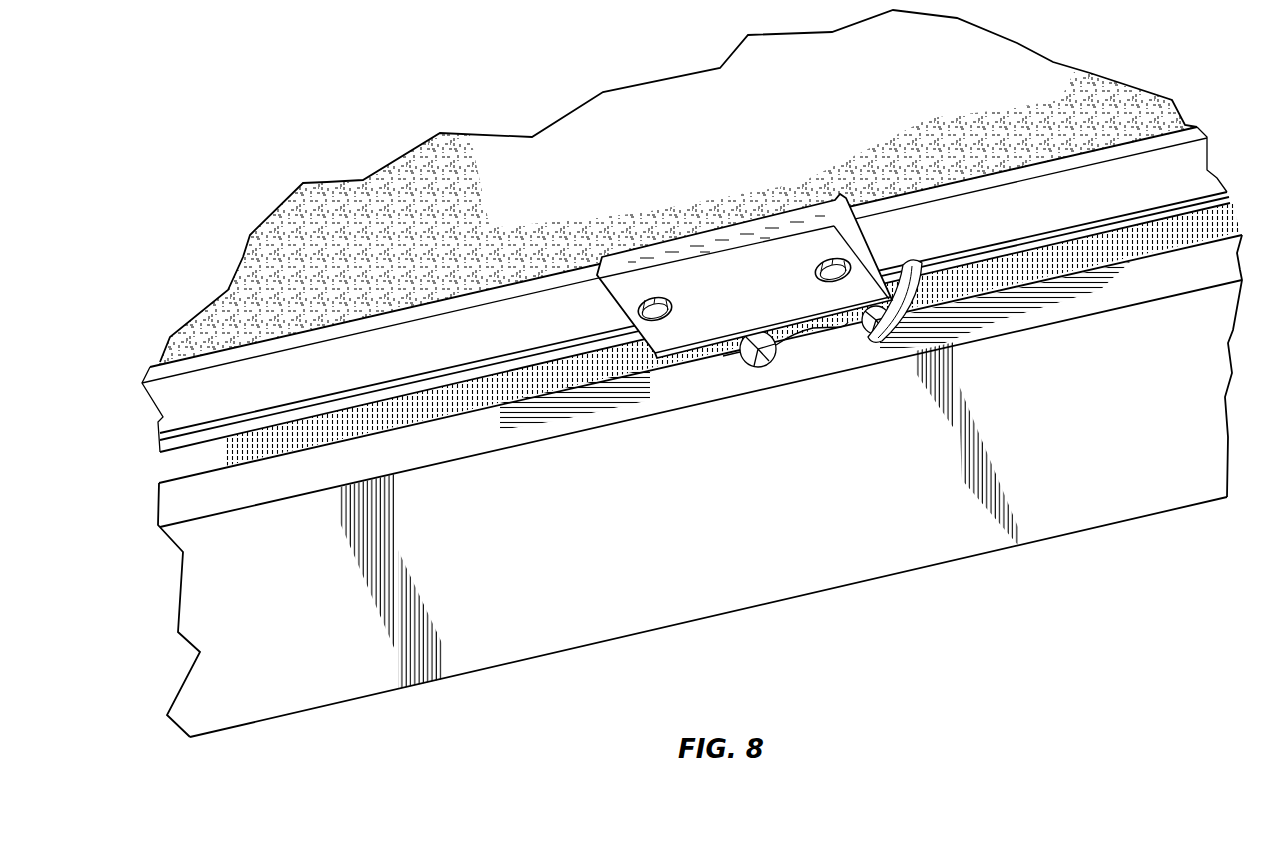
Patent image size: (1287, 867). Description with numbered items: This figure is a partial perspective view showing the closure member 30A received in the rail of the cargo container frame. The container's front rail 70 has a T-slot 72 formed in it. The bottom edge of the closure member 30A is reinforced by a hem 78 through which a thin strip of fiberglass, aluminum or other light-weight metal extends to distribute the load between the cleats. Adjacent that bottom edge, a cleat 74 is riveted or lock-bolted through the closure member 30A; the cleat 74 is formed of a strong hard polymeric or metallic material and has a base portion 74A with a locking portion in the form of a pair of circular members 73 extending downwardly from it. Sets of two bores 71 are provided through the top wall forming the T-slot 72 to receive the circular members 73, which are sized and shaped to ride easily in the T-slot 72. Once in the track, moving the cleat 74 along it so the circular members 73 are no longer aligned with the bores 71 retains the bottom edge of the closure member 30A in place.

The closure member 30A is at (718, 163).
The front rail 70 is at (740, 513).
The bores 71 is at (910, 265).
The T-slot 72 is at (1030, 284).
The circular members 73 is at (846, 323).
The cleats 74 is at (741, 276).
The base portion 74A is at (760, 299).
The hem 78 is at (1023, 221).